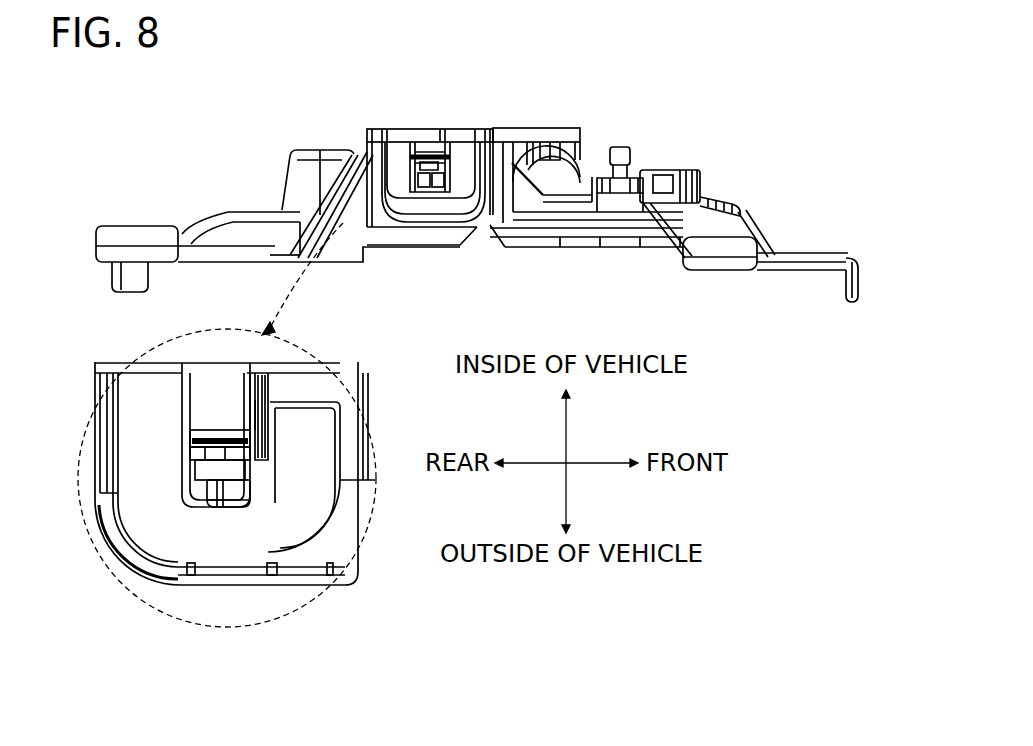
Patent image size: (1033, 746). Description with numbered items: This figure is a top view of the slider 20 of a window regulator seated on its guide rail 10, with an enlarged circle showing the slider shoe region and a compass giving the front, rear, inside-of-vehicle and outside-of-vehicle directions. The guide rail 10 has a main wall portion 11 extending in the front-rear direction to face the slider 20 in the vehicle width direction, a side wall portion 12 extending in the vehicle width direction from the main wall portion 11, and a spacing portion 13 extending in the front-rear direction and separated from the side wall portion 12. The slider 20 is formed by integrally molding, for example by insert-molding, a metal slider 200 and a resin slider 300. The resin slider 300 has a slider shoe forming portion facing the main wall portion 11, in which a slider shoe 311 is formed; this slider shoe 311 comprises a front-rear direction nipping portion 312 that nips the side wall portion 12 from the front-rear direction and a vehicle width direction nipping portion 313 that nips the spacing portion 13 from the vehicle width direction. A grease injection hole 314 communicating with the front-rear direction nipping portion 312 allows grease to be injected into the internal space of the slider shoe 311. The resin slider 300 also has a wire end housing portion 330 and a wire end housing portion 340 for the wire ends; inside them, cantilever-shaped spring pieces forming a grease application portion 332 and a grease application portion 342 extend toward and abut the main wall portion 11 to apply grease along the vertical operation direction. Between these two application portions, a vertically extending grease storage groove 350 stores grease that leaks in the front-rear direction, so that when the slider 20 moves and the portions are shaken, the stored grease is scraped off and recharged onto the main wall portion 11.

The guide rail 10 is at (566, 124).
The main wall portion 11 is at (512, 129).
The side wall portion 12 is at (437, 147).
The spacing portion 13 is at (420, 173).
The slider 20 is at (773, 98).
The metal slider 200 is at (640, 190).
The resin slider 300 is at (650, 170).
The slider shoe 311 is at (292, 668).
The front-rear direction nipping portion 312 is at (279, 412).
The vehicle width direction nipping portion 313 is at (222, 458).
The grease injection hole 314 is at (443, 150).
The wire end housing portion 330 is at (557, 176).
The grease application portion 332 is at (490, 140).
The wire end housing portion 340 is at (627, 173).
The grease application portion 342 is at (543, 142).
The grease storage groove 350 is at (527, 142).